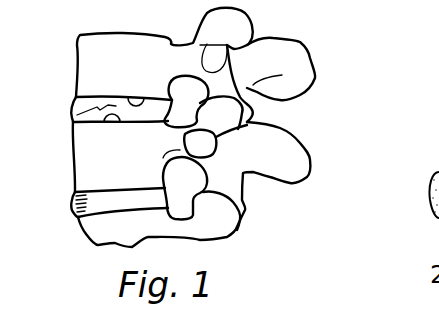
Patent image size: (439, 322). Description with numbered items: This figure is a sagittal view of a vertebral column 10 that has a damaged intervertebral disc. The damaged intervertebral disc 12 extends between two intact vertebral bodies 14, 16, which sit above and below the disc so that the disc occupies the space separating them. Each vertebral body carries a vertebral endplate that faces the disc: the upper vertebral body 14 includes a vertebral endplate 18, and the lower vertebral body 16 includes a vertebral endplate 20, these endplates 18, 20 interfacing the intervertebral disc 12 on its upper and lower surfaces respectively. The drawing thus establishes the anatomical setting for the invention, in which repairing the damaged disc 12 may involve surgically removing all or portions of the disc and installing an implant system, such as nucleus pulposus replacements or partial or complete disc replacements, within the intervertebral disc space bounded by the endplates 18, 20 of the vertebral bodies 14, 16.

The vertebral column 10 is at (356, 94).
The intervertebral disc 12 is at (77, 100).
The vertebral body 14 is at (78, 62).
The vertebral body 16 is at (73, 160).
The vertebral endplate 18 is at (131, 97).
The vertebral endplate 20 is at (119, 123).